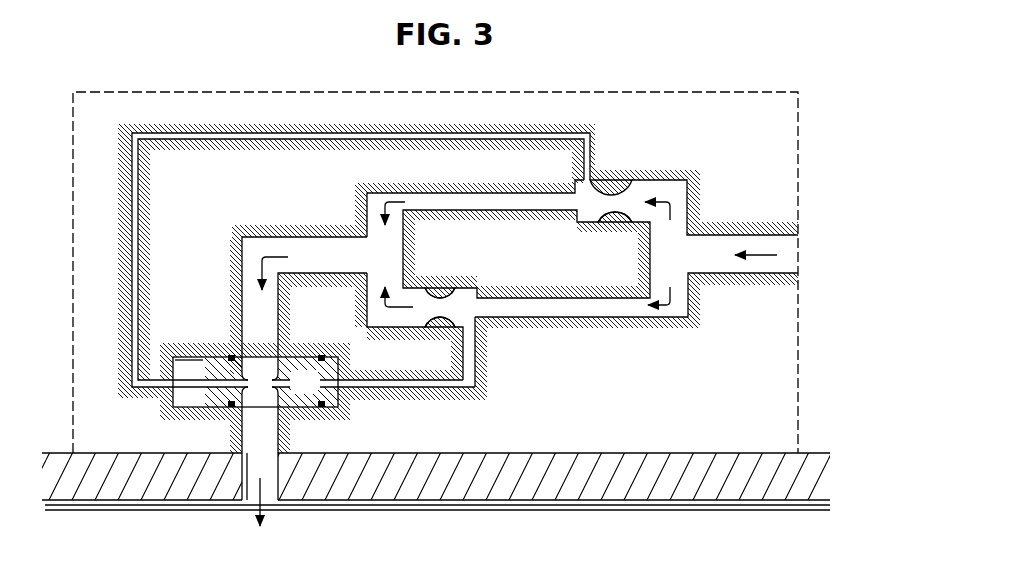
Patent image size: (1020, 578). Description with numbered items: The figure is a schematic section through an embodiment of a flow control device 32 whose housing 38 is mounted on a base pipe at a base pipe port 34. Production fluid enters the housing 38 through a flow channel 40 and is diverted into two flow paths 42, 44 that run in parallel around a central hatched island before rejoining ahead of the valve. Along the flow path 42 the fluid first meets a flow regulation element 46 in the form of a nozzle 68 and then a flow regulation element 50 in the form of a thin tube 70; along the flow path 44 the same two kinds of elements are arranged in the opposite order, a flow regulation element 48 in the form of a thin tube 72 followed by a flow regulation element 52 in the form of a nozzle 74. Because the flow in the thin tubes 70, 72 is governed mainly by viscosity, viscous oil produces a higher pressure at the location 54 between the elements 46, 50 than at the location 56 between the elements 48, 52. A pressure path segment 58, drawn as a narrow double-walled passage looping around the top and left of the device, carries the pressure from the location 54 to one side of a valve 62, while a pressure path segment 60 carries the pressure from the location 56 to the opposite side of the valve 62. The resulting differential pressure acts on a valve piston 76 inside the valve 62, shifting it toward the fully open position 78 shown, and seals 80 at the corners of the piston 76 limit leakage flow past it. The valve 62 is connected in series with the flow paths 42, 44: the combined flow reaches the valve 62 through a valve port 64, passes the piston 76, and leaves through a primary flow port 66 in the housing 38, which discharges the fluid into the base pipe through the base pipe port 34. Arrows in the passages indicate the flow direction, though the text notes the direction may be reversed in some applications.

The flow control device 32 is at (148, 74).
The base pipe port 34 is at (243, 490).
The housing 38 is at (707, 92).
The flow channel 40 is at (743, 235).
The flow path 42 is at (690, 198).
The flow path 44 is at (693, 305).
The flow regulation element 46 is at (644, 173).
The flow regulation element 48 is at (560, 327).
The flow regulation element 50 is at (437, 183).
The flow regulation element 52 is at (448, 280).
The location 54 is at (598, 182).
The location 56 is at (482, 333).
The pressure path segment 58 is at (258, 133).
The pressure path segment 60 is at (417, 388).
The valve 62 is at (190, 344).
The valve port 64 is at (288, 236).
The primary flow port 66 is at (282, 428).
The nozzle 68 is at (615, 222).
The thin tube 70 is at (475, 193).
The thin tube 72 is at (595, 320).
The nozzle 74 is at (442, 318).
The valve piston 76 is at (316, 393).
The fully open position 78 is at (254, 409).
The seals 80 is at (230, 356).